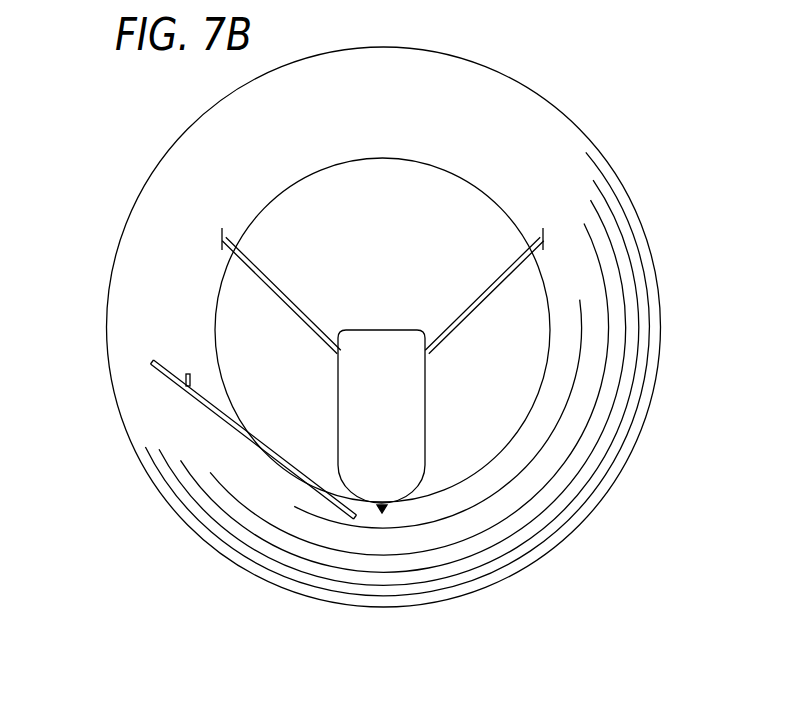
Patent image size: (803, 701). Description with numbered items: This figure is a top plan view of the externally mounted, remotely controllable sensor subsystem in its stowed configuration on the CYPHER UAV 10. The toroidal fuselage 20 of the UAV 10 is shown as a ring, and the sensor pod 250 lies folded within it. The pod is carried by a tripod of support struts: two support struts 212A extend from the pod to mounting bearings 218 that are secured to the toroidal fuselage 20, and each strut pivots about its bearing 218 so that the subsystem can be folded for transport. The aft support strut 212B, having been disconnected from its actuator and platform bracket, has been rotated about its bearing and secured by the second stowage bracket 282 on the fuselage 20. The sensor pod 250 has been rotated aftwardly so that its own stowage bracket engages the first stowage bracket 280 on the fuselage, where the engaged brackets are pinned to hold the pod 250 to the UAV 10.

The CYPHER UAV 10 is at (635, 174).
The toroidal fuselage 20 is at (365, 128).
The mounting bearing 218 is at (220, 228).
The support strut 212A is at (298, 312).
The aft support strut 212B is at (207, 408).
The second stowage bracket 282 is at (183, 391).
The sensor pod 250 is at (428, 418).
The first stowage bracket 280 is at (381, 507).